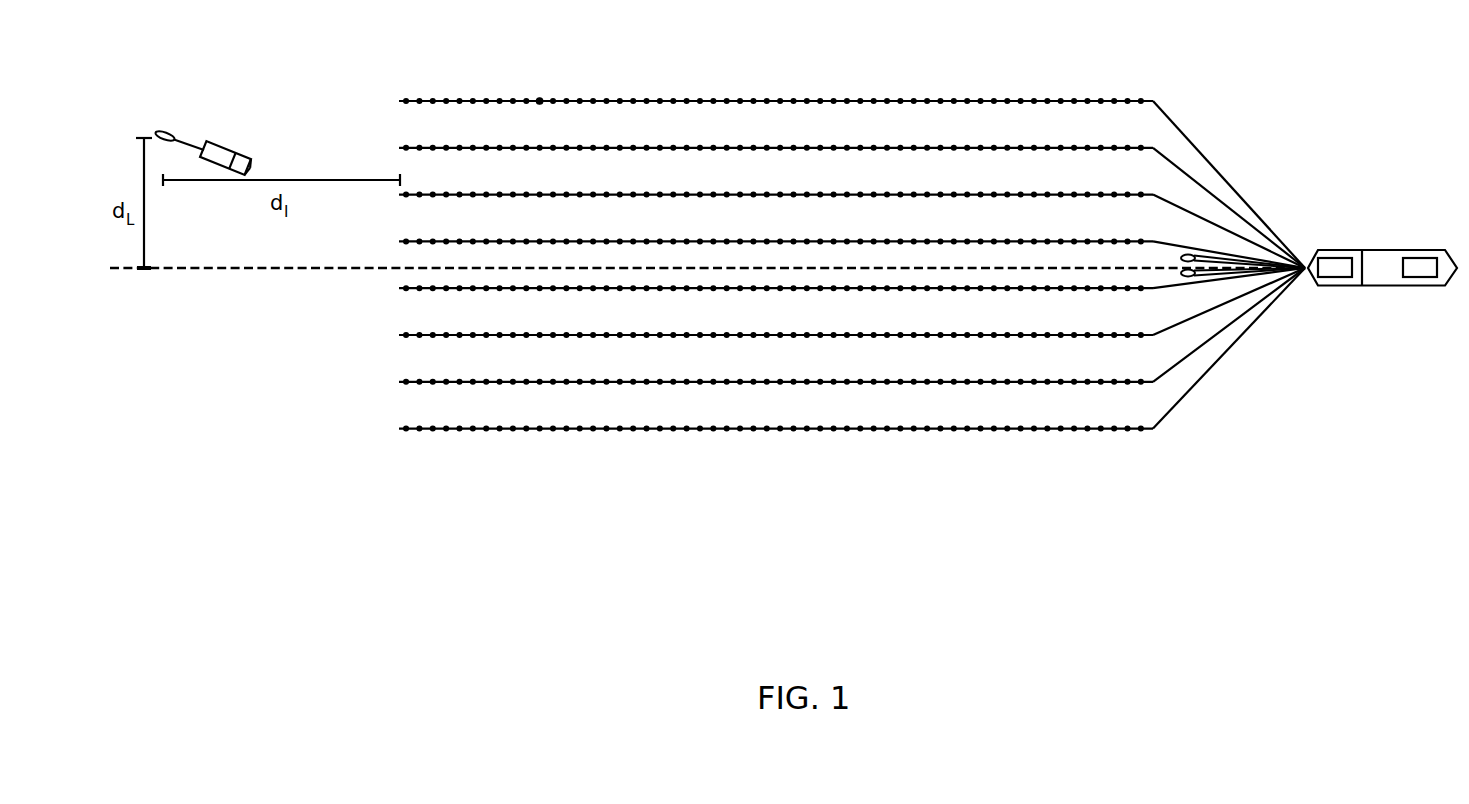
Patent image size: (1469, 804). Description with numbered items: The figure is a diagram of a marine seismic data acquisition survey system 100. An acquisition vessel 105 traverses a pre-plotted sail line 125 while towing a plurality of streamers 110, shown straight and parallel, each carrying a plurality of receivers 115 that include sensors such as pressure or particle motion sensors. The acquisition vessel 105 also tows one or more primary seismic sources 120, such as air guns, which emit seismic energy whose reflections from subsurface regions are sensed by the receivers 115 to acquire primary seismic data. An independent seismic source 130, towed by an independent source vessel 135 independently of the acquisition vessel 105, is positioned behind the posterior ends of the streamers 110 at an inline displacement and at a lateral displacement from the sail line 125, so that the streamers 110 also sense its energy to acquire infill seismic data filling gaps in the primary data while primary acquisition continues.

The marine seismic data acquisition survey system 100 is at (908, 39).
The acquisition vessel 105 is at (1413, 286).
The streamers 110 is at (454, 100).
The receivers 115 is at (540, 100).
The seismic source 120 is at (1181, 260).
The sail line 125 is at (319, 269).
The independent seismic source 130 is at (158, 133).
The independent source vessel 135 is at (229, 144).